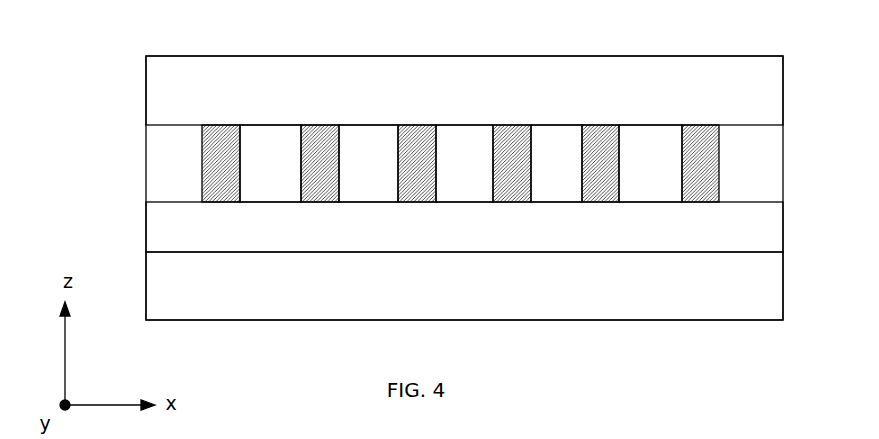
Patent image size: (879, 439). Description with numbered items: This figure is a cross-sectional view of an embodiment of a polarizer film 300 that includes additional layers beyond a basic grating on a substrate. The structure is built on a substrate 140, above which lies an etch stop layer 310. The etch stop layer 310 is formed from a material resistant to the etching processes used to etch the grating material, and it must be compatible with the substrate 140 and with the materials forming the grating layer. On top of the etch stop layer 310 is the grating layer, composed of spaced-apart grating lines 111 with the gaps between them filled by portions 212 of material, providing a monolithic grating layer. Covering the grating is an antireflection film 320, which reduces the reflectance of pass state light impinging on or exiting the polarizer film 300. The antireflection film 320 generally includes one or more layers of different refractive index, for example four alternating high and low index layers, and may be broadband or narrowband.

The polarizer film 300 is at (87, 103).
The antireflection film 320 is at (446, 104).
The etch stop layer 310 is at (446, 243).
The substrate 140 is at (446, 300).
The portions 212 is at (250, 175).
The grating lines 111 is at (318, 125).